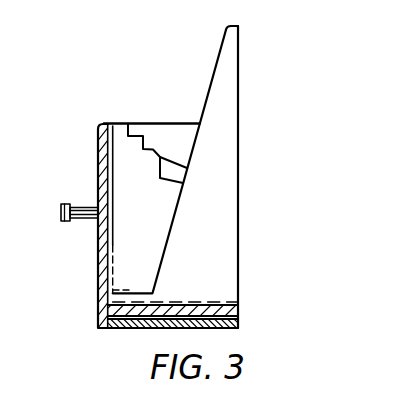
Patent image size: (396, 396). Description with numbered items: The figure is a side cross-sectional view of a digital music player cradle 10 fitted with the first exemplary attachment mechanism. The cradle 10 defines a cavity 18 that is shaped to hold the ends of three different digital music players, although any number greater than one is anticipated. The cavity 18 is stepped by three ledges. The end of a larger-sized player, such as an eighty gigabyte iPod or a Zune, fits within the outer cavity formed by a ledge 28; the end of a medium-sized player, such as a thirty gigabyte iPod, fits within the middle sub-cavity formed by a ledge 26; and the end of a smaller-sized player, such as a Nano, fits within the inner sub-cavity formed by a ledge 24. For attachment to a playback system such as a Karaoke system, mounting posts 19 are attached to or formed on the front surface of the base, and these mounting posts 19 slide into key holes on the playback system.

The digital music player cradle 10 is at (298, 114).
The cavity 18 is at (164, 98).
The mounting posts 19 is at (76, 221).
The ledge 24 is at (174, 177).
The ledge 26 is at (150, 147).
The ledge 28 is at (137, 133).